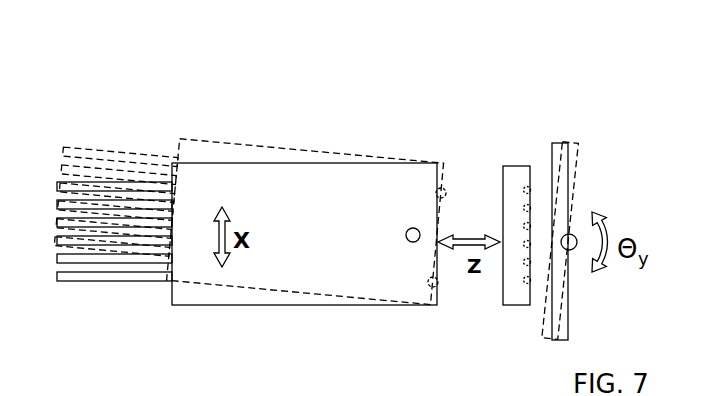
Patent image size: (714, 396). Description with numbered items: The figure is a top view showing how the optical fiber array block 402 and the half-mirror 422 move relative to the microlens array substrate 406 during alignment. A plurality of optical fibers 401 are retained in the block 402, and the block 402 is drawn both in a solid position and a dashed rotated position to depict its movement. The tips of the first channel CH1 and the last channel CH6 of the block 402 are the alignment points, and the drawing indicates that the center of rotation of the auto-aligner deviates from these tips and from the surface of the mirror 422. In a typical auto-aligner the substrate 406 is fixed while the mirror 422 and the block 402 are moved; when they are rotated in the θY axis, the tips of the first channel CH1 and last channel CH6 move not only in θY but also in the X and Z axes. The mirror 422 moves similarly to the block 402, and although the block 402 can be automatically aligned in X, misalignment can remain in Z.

The optical fibers 401 is at (119, 108).
The optical fiber array block 402 is at (241, 163).
The microlens array substrate 406 is at (515, 165).
The half-mirror 422 is at (558, 142).
The last channel CH6 is at (446, 190).
The first channel CH1 is at (440, 287).